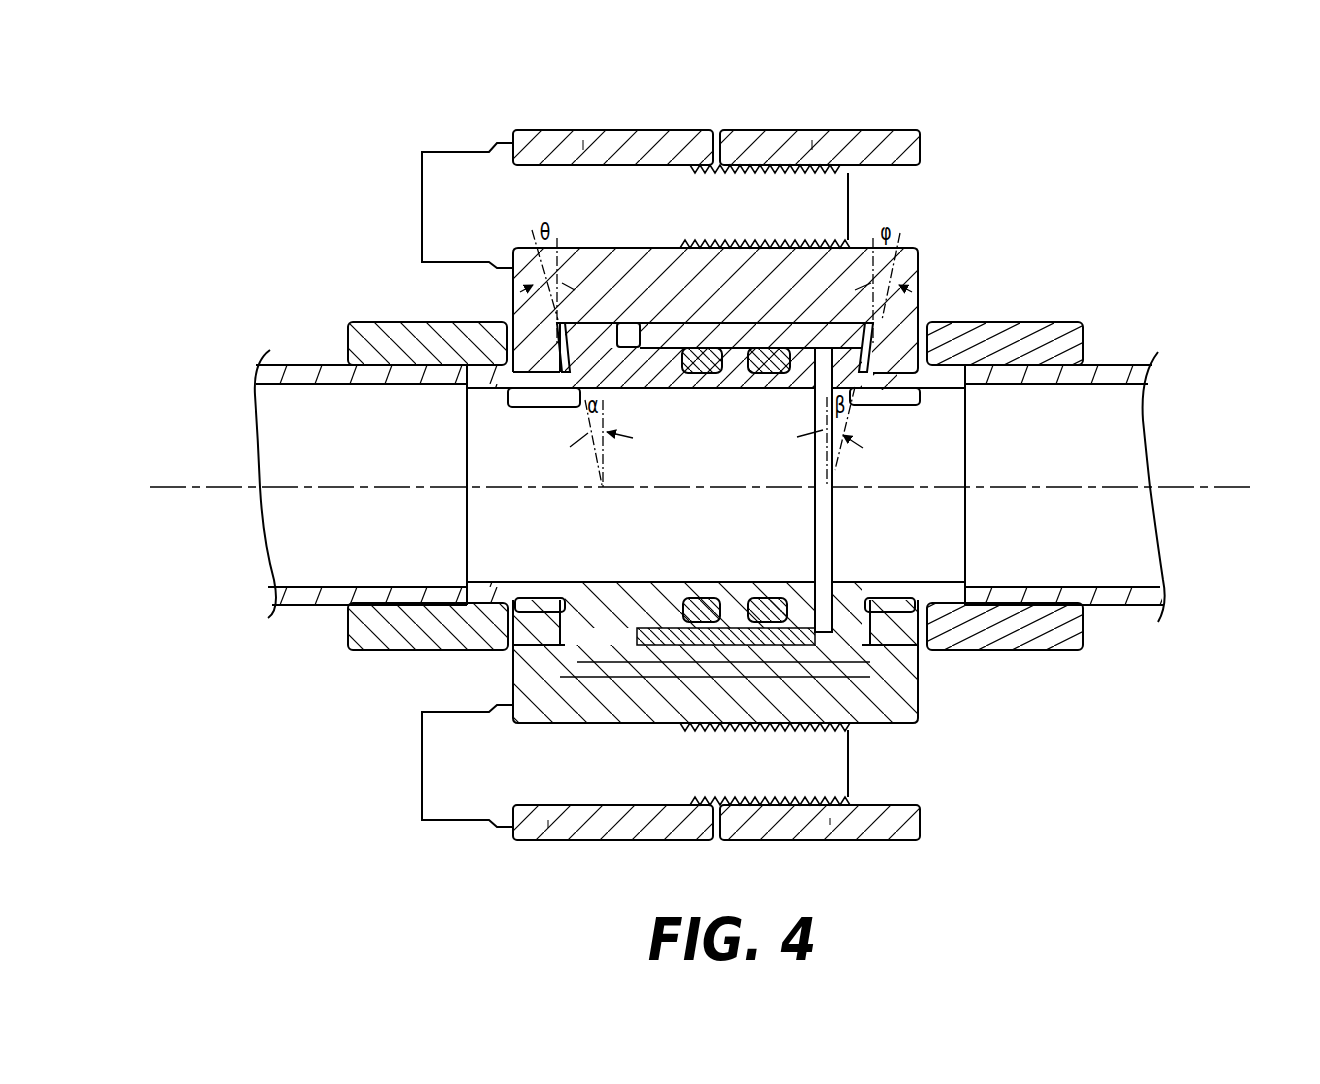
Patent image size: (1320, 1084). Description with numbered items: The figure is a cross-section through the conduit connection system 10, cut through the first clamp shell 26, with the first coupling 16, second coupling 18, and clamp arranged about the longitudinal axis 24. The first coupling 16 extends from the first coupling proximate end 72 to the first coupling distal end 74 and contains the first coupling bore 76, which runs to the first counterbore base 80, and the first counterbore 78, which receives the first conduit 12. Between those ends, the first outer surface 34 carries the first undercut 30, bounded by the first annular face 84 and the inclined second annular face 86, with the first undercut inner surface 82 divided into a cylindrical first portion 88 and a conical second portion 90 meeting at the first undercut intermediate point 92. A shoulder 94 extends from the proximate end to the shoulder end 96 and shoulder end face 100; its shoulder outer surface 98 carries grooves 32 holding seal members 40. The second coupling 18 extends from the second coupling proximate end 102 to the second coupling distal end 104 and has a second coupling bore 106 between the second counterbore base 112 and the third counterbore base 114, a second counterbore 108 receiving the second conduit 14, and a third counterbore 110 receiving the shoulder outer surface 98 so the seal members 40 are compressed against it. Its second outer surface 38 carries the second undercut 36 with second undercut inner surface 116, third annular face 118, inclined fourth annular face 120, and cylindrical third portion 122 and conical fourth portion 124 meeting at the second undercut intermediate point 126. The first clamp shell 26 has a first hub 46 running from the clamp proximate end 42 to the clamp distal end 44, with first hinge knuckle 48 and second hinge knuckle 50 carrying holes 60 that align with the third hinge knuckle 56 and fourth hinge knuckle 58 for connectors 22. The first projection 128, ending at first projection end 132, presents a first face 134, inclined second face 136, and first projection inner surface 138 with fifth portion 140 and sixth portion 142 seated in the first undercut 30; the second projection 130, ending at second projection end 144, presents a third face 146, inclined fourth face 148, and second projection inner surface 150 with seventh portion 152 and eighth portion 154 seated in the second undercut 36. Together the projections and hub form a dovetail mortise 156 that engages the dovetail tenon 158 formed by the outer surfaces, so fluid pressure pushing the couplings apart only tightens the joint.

The conduit connection system 10 is at (958, 88).
The first conduit 12 is at (268, 375).
The second conduit 14 is at (1150, 373).
The first coupling 16 is at (352, 650).
The second coupling 18 is at (1078, 637).
The connector 22 is at (669, 216).
The longitudinal axis 24 is at (1215, 487).
The first clamp shell 26 is at (758, 294).
The first undercut 30 is at (498, 622).
The groove 32 is at (700, 378).
The first outer surface 34 is at (355, 322).
The second undercut 36 is at (935, 632).
The second outer surface 38 is at (1050, 322).
The seal member 40 is at (762, 378).
The clamp proximate end 42 is at (511, 290).
The clamp distal end 44 is at (932, 262).
The first hub 46 is at (920, 722).
The first hinge knuckle 48 is at (548, 828).
The second hinge knuckle 50 is at (812, 140).
The third hinge knuckle 56 is at (830, 825).
The fourth hinge knuckle 58 is at (583, 140).
The hole 60 is at (640, 160).
The first coupling proximate end 72 is at (806, 458).
The first coupling distal end 74 is at (346, 340).
The first coupling bore 76 is at (730, 625).
The first counterbore 78 is at (394, 386).
The first counterbore base 80 is at (445, 600).
The first undercut inner surface 82 is at (530, 407).
The first annular face 84 is at (500, 345).
The second annular face 86 is at (568, 352).
The first portion 88 is at (580, 395).
The second portion 90 is at (497, 390).
The first undercut intermediate point 92 is at (530, 598).
The shoulder 94 is at (610, 608).
The shoulder end 96 is at (636, 608).
The shoulder outer surface 98 is at (650, 625).
The shoulder end face 100 is at (598, 635).
The second coupling proximate end 102 is at (632, 330).
The second coupling distal end 104 is at (1098, 325).
The second coupling bore 106 is at (890, 590).
The second counterbore 108 is at (1080, 592).
The third counterbore 110 is at (742, 345).
The second counterbore base 112 is at (1010, 600).
The third counterbore base 114 is at (866, 598).
The second undercut inner surface 116 is at (882, 405).
The third annular face 118 is at (900, 350).
The fourth annular face 120 is at (860, 350).
The third portion 122 is at (918, 400).
The fourth portion 124 is at (902, 375).
The second undercut intermediate point 126 is at (932, 608).
The first projection 128 is at (480, 380).
The second projection 130 is at (905, 345).
The first projection end 132 is at (565, 598).
The first face 134 is at (508, 612).
The second face 136 is at (552, 650).
The first projection inner surface 138 is at (515, 700).
The fifth portion 140 is at (545, 600).
The sixth portion 142 is at (518, 596).
The second projection end 144 is at (875, 598).
The third face 146 is at (940, 625).
The fourth face 148 is at (910, 692).
The second projection inner surface 150 is at (918, 665).
The seventh portion 152 is at (905, 598).
The eighth portion 154 is at (940, 605).
The dovetail mortise 156 is at (718, 665).
The dovetail tenon 158 is at (778, 660).